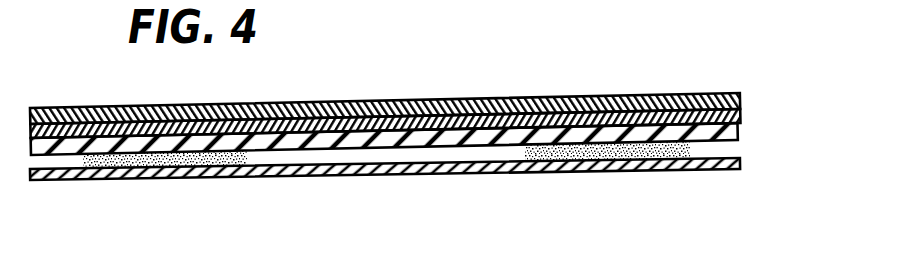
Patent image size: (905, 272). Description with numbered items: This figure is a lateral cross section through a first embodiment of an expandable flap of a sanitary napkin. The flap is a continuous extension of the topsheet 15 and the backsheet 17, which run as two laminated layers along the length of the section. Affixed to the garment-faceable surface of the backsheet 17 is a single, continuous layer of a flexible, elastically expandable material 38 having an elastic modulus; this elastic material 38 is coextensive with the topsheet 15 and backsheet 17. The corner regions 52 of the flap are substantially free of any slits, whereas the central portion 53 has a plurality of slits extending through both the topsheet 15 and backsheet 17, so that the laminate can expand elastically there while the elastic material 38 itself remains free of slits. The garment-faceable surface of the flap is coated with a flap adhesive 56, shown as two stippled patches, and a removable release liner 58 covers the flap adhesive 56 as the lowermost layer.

The corner region 52 is at (424, 131).
The central portion 53 is at (417, 72).
The topsheet 15 is at (625, 92).
The backsheet 17 is at (741, 118).
The elastically expandable material 38 is at (735, 135).
The flap adhesive 56 is at (133, 167).
The release liner 58 is at (369, 172).